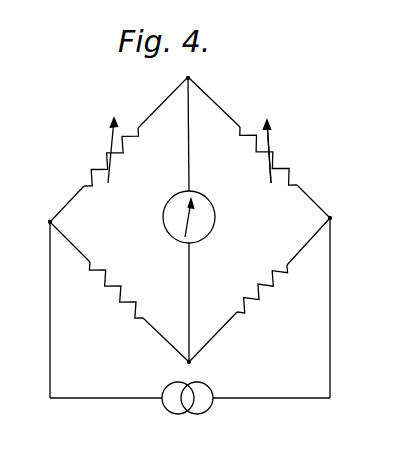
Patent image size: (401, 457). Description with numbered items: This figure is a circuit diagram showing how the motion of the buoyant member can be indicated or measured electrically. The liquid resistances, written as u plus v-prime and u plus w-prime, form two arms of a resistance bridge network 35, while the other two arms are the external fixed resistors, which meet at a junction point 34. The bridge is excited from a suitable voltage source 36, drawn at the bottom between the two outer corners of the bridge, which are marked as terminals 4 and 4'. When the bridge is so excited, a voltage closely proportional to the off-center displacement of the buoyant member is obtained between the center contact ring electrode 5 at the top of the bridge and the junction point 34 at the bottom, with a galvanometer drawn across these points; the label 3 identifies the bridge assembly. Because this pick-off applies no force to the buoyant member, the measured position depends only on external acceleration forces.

The bridge circuit 3 is at (172, 237).
The bridge terminal 4 is at (31, 223).
The bridge terminal 4' is at (351, 216).
The center contact ring electrode 5 is at (193, 79).
The junction point 34 is at (194, 362).
The resistance bridge network 35 is at (283, 116).
The voltage source 36 is at (206, 410).